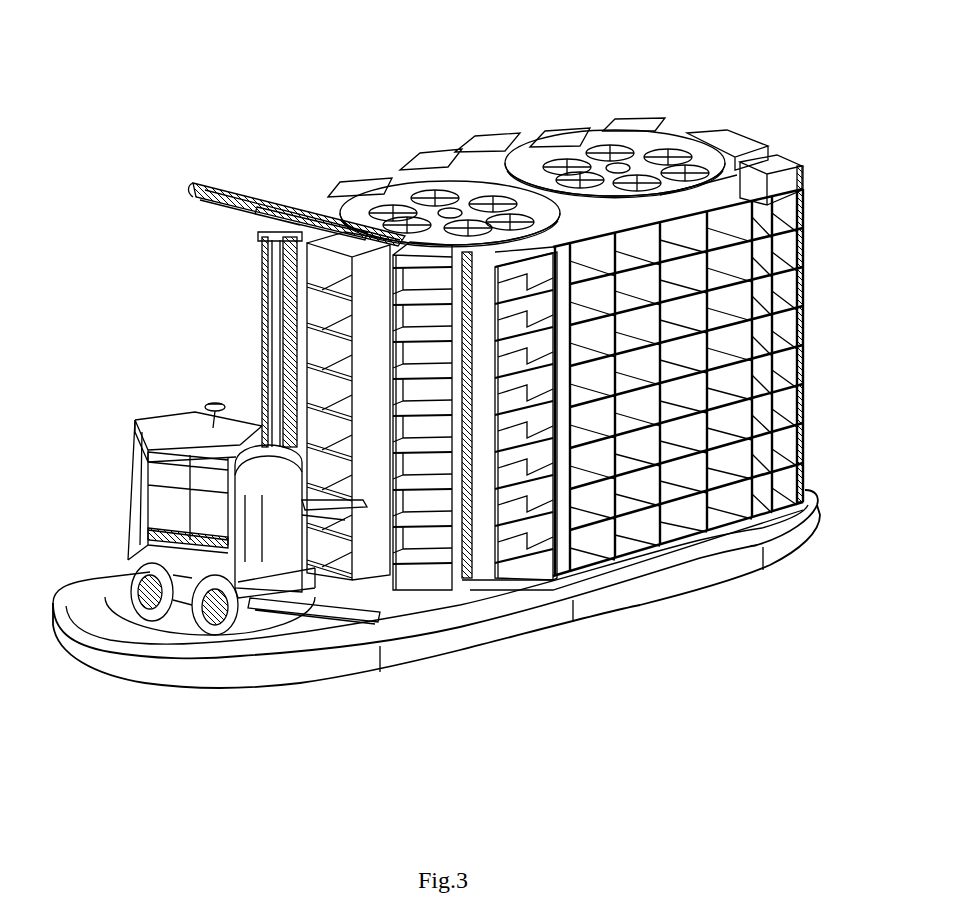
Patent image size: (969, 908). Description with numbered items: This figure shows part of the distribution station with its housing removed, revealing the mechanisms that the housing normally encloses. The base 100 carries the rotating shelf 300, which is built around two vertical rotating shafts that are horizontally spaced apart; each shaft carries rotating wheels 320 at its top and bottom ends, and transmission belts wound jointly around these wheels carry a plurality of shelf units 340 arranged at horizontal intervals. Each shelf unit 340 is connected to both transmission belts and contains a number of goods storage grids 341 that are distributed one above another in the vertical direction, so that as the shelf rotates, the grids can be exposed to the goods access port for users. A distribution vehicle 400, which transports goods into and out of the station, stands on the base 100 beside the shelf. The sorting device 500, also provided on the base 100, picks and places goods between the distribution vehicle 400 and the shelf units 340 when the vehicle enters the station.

The base 100 is at (270, 673).
The rotating shelf 300 is at (547, 120).
The rotating wheel 320 is at (410, 200).
The shelf unit 340 is at (357, 185).
The goods storage grid 341 is at (582, 552).
The distribution vehicle 400 is at (200, 433).
The sorting device 500 is at (217, 182).